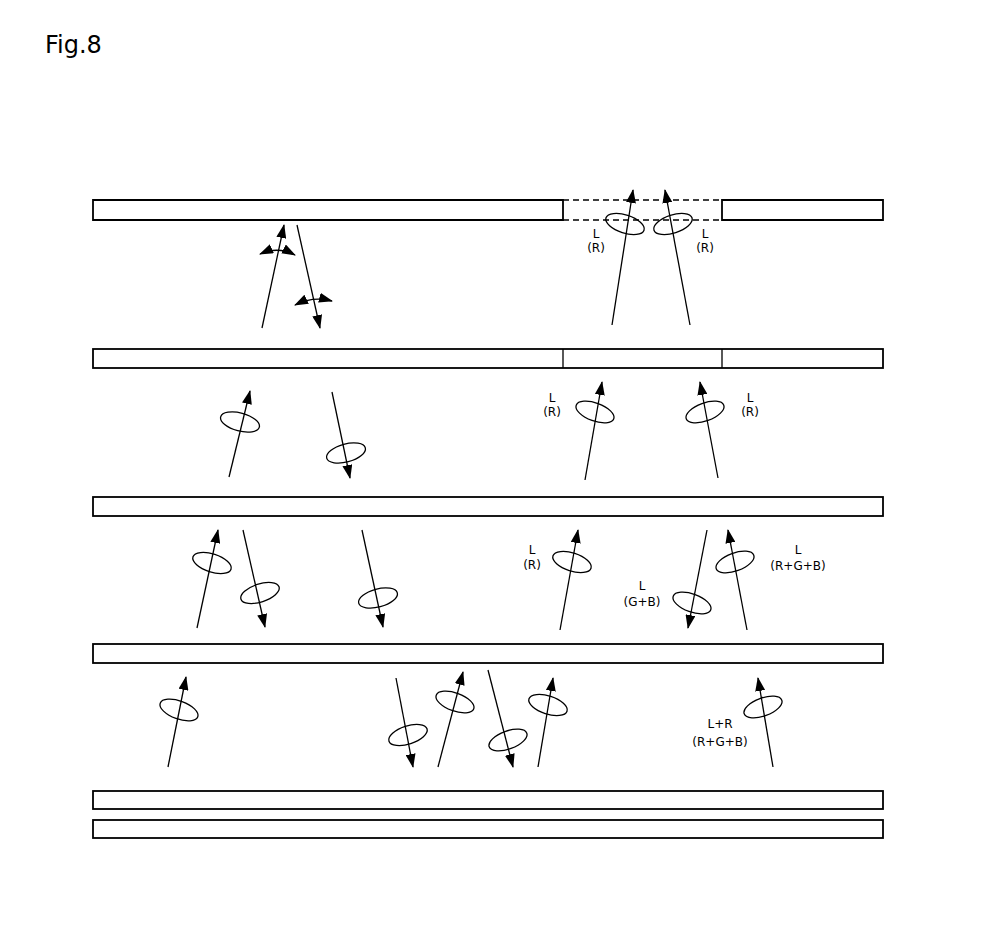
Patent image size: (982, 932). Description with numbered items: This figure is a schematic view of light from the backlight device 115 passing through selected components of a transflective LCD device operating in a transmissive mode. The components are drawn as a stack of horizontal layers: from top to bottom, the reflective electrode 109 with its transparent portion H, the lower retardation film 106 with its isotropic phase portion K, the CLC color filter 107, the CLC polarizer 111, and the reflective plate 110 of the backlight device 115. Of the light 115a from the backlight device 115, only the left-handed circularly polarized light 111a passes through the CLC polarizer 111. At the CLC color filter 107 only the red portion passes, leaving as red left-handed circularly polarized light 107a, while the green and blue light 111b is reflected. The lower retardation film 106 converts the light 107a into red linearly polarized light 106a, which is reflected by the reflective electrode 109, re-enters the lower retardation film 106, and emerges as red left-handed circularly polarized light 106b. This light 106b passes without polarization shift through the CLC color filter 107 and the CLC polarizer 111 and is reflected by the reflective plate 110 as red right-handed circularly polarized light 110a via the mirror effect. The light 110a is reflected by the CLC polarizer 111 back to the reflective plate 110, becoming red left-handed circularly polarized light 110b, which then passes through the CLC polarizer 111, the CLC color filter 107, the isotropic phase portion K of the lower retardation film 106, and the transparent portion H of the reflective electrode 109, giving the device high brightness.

The reflective electrode 109 is at (93, 213).
The lower retardation film 106 is at (93, 358).
The CLC color filter 107 is at (93, 505).
The CLC polarizer 111 is at (93, 652).
The reflective plate 110 is at (93, 796).
The backlight device 115 is at (93, 826).
The red linearly polarized light 106a is at (268, 285).
The red left-handed circularly polarized light 106b is at (350, 443).
The red left-handed circularly polarized light 107a is at (220, 423).
The left-handed circularly polarized light 111a is at (209, 572).
The green- and blue-light of the left-handed circularly polarized light 111b is at (268, 580).
The light from the backlight device 115a is at (170, 729).
The red right-handed circularly polarized light 110a is at (487, 713).
The red left-handed circularly polarized light 110b is at (546, 739).
The transparent portion H is at (705, 210).
The isotropic phase portion K is at (703, 357).